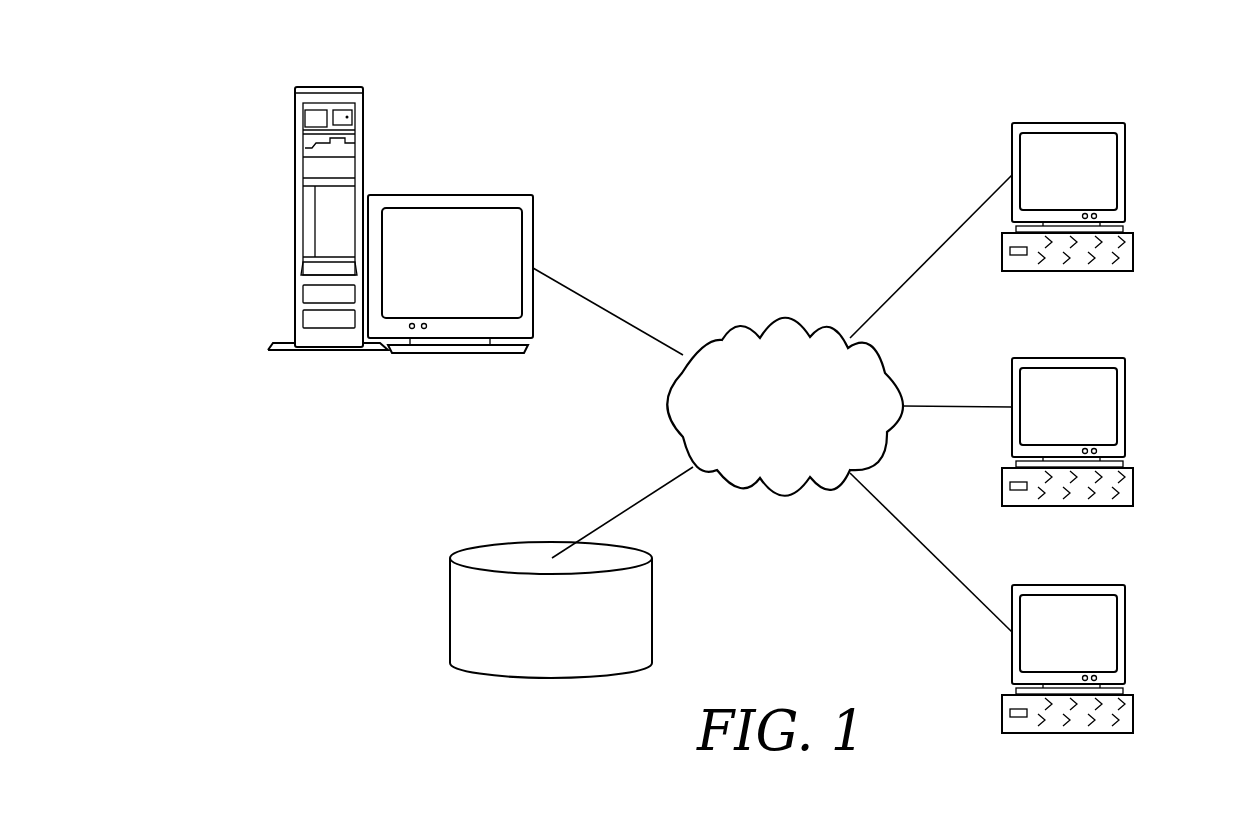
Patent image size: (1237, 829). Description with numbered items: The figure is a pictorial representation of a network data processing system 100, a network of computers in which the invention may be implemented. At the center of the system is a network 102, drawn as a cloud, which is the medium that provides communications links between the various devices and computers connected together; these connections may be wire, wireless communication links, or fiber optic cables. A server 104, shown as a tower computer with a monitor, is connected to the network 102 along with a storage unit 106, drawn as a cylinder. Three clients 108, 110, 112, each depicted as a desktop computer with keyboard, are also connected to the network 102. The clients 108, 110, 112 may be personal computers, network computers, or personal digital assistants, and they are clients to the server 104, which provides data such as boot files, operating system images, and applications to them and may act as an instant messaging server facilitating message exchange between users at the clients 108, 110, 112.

The network data processing system 100 is at (866, 140).
The network 102 is at (740, 327).
The server 104 is at (293, 220).
The storage unit 106 is at (450, 607).
The client 108 is at (1125, 173).
The client 110 is at (1124, 407).
The client 112 is at (1124, 635).